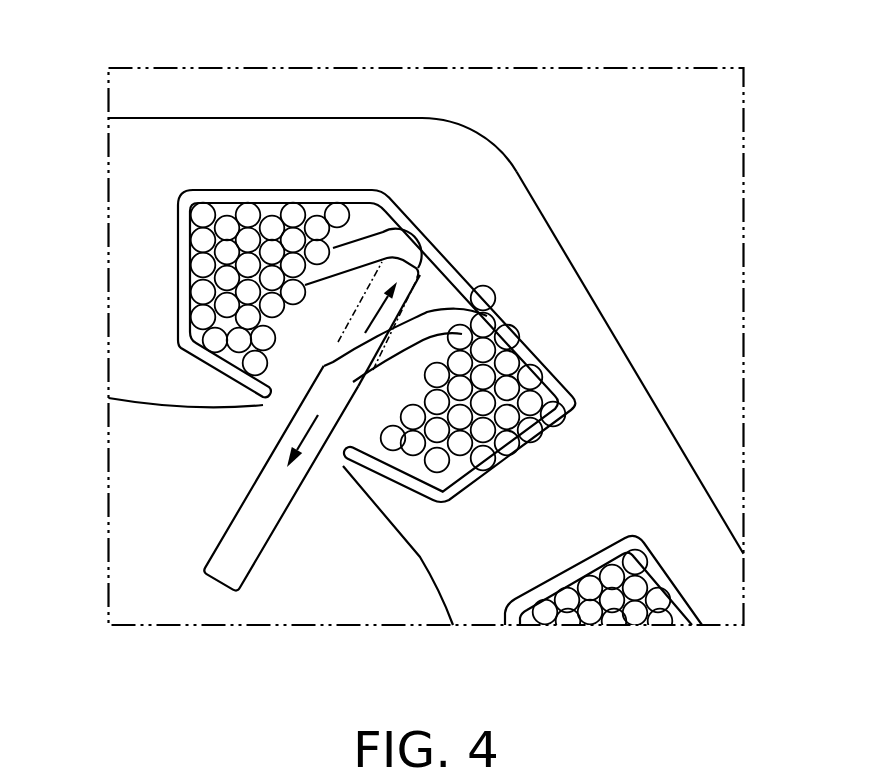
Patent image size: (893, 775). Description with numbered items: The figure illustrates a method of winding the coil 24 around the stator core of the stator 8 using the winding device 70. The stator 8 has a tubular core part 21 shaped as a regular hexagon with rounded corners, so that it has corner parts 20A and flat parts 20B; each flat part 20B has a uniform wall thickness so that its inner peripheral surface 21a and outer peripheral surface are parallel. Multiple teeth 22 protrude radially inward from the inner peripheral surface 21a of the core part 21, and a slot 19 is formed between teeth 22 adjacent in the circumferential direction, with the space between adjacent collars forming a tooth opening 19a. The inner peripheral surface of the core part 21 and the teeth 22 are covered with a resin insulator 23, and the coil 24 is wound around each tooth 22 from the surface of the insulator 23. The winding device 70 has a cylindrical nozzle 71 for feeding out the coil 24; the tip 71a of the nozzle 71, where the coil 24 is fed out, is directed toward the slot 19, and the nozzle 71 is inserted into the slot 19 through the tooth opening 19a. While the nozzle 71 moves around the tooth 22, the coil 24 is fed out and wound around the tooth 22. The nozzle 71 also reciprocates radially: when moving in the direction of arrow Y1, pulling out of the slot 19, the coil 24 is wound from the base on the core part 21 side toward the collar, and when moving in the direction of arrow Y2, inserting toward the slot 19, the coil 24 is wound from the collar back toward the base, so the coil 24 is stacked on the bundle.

The stator 8 is at (626, 166).
The slot 19 is at (405, 388).
The tooth opening 19a is at (343, 460).
The corner part 20A is at (487, 138).
The flat part 20B is at (602, 307).
The core part 21 is at (355, 133).
The inner peripheral surface 21a is at (262, 192).
The tooth 22 is at (501, 458).
The insulator 23 is at (177, 277).
The coil 24 is at (444, 313).
The winding device 70 is at (198, 478).
The nozzle 71 is at (243, 510).
The tip 71a is at (345, 373).
The arrow Y1 is at (267, 410).
The arrow Y2 is at (352, 307).